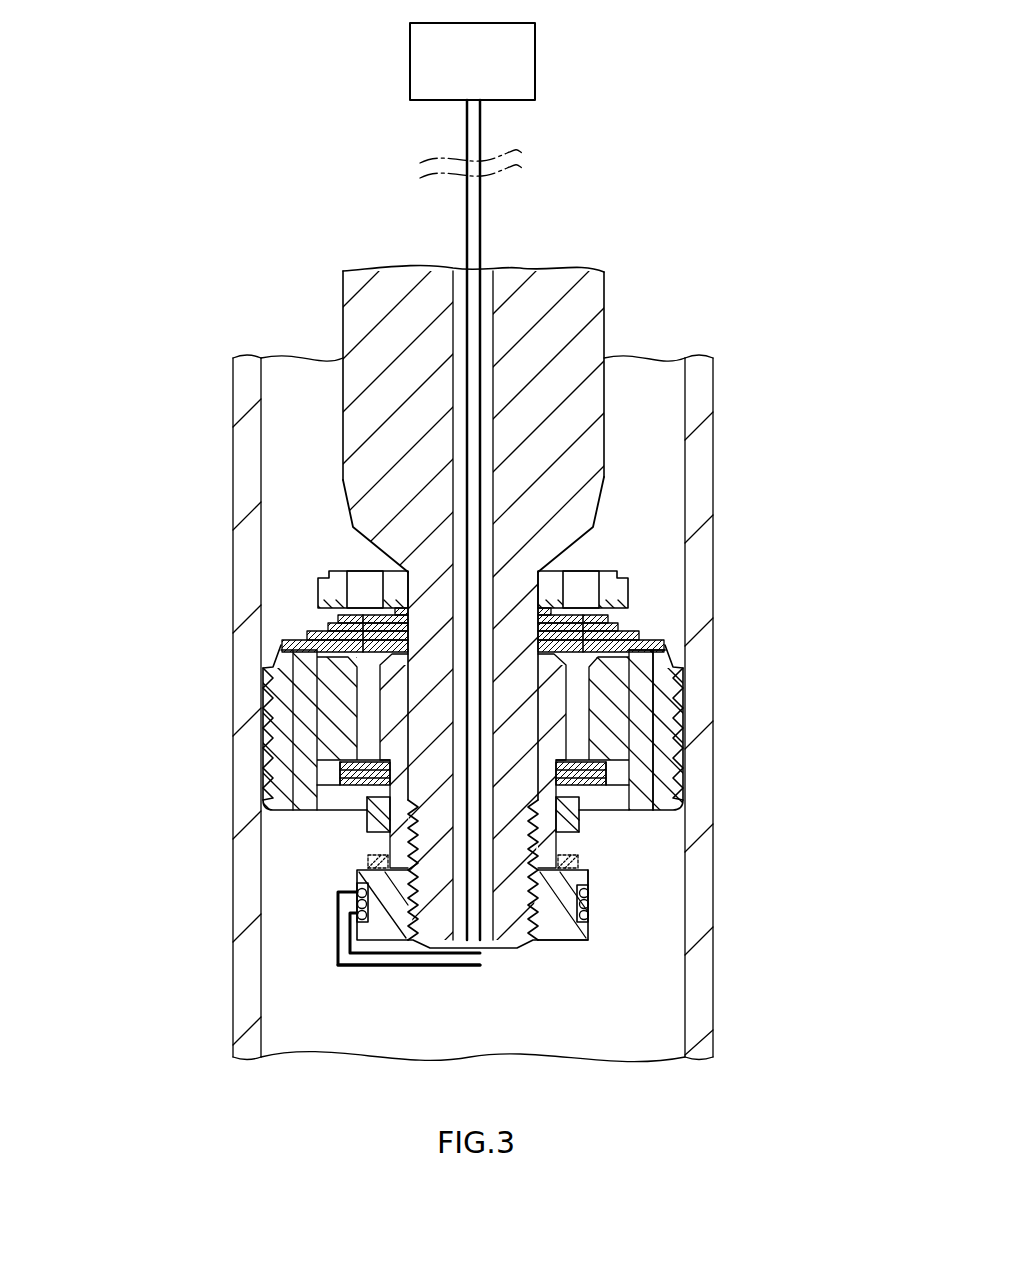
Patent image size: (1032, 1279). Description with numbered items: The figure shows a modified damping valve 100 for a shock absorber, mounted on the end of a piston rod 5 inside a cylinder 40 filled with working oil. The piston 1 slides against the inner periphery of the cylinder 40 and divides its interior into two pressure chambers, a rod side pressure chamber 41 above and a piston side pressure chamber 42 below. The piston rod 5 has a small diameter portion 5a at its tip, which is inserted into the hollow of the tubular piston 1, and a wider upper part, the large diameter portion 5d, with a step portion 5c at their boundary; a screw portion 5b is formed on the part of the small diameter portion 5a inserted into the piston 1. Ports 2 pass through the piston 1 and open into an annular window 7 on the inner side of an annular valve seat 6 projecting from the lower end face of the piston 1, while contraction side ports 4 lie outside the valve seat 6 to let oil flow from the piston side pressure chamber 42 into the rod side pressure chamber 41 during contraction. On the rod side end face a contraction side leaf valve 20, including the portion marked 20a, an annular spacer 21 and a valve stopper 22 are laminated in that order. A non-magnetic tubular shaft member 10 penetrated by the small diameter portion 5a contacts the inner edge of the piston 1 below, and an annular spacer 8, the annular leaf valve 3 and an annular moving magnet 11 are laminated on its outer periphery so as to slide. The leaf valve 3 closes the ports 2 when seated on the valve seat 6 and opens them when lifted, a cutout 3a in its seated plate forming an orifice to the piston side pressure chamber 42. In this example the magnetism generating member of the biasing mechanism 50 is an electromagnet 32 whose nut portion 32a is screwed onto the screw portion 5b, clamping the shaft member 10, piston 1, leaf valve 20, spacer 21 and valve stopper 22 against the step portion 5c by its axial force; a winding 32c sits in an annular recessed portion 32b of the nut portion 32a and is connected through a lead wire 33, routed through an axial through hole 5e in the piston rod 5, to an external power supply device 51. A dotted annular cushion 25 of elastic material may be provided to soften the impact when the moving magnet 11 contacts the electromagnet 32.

The piston 1 is at (680, 685).
The port 2 is at (362, 682).
The leaf valve 3 is at (362, 808).
The cutout 3a is at (333, 786).
The contraction side port 4 is at (297, 658).
The piston rod 5 is at (610, 328).
The small diameter portion 5a is at (433, 702).
The screw portion 5b is at (386, 942).
The step portion 5c is at (545, 566).
The main body portion 5d is at (380, 405).
The through hole 5e is at (490, 292).
The valve seat 6 is at (340, 765).
The annular window 7 is at (585, 818).
The annular spacer 8 is at (590, 772).
The shaft member 10 is at (562, 843).
The moving magnet 11 is at (365, 835).
The contraction side leaf valve 20 is at (645, 631).
The end portion of elastic member 20a is at (375, 627).
The annular spacer 21 is at (625, 602).
The valve stopper 22 is at (613, 588).
The cushion 25 is at (367, 860).
The electromagnet 32 is at (567, 946).
The nut portion 32a is at (556, 945).
The annular recessed portion 32b is at (595, 910).
The winding 32c is at (595, 893).
The lead wire 33 is at (440, 965).
The cylinder 40 is at (703, 988).
The rod side pressure chamber 41 is at (650, 405).
The piston side pressure chamber 42 is at (648, 1025).
The biasing mechanism 50 is at (333, 876).
The power supply device 51 is at (536, 57).
The damping valve 100 is at (630, 808).